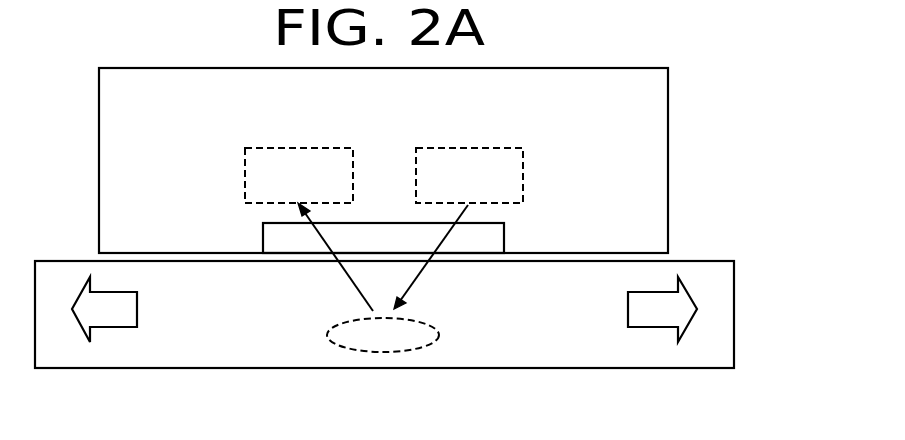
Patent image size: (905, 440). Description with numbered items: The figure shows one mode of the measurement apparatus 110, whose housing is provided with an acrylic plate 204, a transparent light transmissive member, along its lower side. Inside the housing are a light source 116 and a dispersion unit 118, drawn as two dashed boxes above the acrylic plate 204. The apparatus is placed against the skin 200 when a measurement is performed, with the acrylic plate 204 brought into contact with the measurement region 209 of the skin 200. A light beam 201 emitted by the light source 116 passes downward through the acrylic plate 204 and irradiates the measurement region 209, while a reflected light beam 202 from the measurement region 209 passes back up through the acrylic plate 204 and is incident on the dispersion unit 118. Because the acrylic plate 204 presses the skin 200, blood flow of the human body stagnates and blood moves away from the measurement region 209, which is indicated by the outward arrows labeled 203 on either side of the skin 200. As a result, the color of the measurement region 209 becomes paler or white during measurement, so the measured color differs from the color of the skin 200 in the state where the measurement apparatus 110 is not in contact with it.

The measurement apparatus 110 is at (669, 108).
The skin 200 is at (734, 275).
The acrylic plate 204 is at (505, 240).
The dispersion unit 118 is at (317, 146).
The light source 116 is at (483, 146).
The reflected light beam 202 is at (344, 278).
The light beam 201 is at (422, 279).
The measurement region 209 is at (383, 335).
The blood movement away from measurement region 203 is at (110, 328).